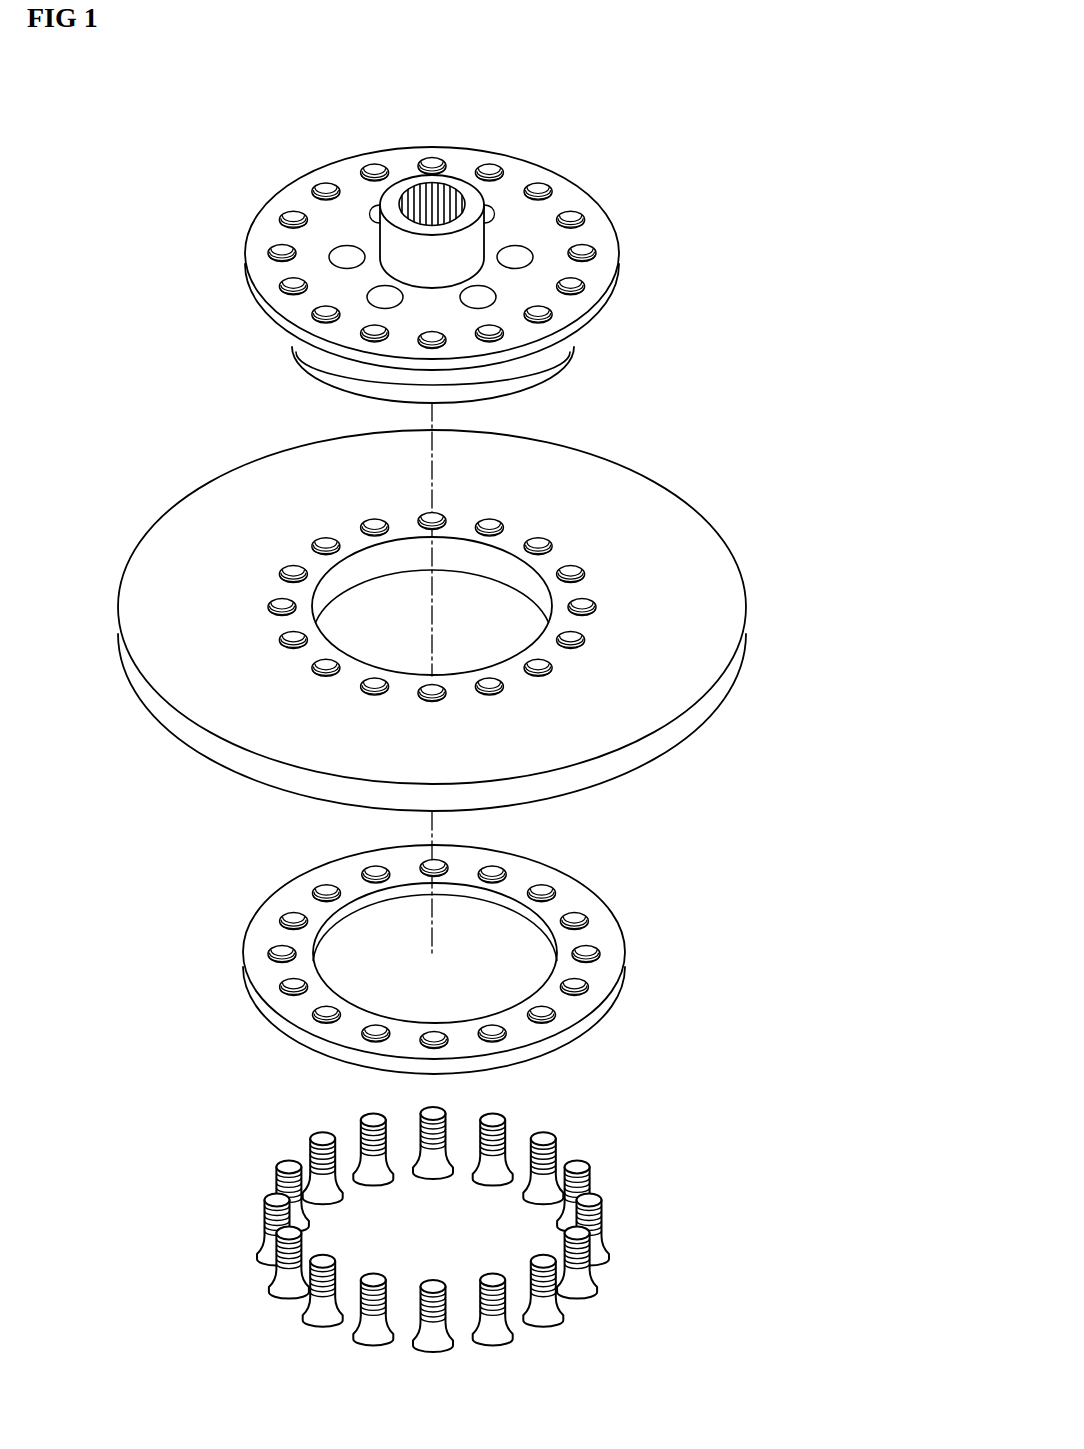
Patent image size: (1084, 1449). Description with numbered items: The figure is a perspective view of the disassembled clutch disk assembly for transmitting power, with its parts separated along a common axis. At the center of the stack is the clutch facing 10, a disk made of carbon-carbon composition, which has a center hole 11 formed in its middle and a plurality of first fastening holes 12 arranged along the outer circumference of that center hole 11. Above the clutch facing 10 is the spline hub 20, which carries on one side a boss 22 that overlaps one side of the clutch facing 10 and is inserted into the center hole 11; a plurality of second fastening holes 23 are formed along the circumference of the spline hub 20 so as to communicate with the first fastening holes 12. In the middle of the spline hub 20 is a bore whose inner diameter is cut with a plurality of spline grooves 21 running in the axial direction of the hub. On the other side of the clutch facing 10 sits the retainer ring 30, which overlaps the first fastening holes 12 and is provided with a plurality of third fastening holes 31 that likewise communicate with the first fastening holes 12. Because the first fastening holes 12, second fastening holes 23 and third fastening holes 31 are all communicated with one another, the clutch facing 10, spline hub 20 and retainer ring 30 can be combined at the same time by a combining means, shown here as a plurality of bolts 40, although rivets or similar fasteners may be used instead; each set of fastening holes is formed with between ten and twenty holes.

The clutch facing 10 is at (461, 620).
The center hole 11 is at (322, 603).
The first fastening holes 12 is at (590, 609).
The spline hub 20 is at (490, 234).
The spline grooves 21 is at (445, 192).
The boss 22 is at (563, 383).
The second fastening holes 23 is at (588, 262).
The retainer ring 30 is at (515, 959).
The third fastening holes 31 is at (542, 1022).
The bolts 40 is at (598, 1199).